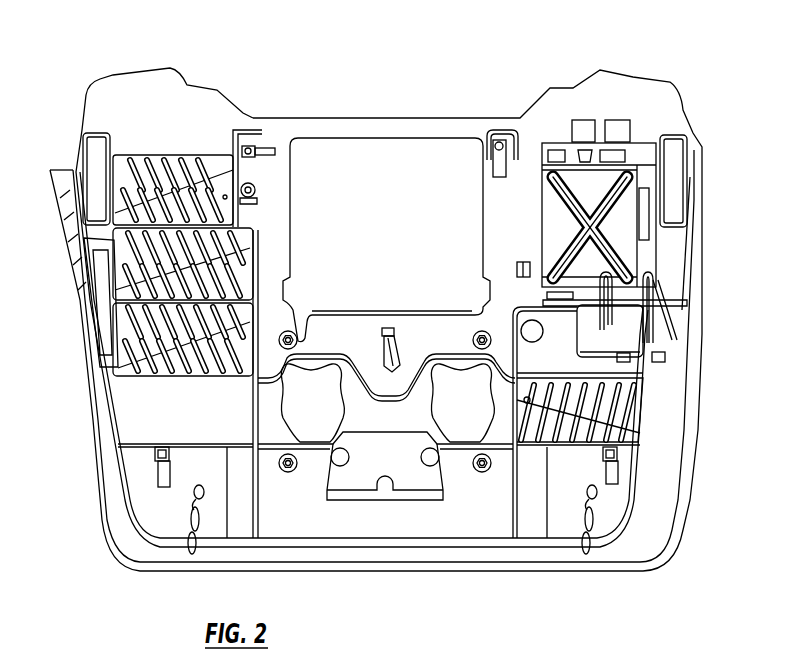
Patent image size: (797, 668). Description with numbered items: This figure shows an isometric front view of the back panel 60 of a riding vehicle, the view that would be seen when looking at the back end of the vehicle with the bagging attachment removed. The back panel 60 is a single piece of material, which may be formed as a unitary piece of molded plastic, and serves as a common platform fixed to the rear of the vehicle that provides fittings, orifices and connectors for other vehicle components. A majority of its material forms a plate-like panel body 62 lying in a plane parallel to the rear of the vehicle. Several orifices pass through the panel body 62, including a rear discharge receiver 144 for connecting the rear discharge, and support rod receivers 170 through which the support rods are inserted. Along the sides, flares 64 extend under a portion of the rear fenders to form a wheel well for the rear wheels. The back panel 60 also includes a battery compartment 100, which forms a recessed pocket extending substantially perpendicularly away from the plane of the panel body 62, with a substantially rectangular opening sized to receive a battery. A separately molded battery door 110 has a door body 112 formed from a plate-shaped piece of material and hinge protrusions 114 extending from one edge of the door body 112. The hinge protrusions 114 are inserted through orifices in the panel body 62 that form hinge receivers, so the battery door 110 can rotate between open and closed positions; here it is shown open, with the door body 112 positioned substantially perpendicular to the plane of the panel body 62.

The back panel 60 is at (442, 57).
The panel body 62 is at (146, 92).
The flares 64 is at (62, 170).
The battery compartment 100 is at (592, 218).
The battery door 110 is at (645, 323).
The door body 112 is at (668, 302).
The hinge protrusions 114 is at (547, 296).
The rear discharge receiver 144 is at (363, 160).
The support rod receivers 170 is at (463, 415).